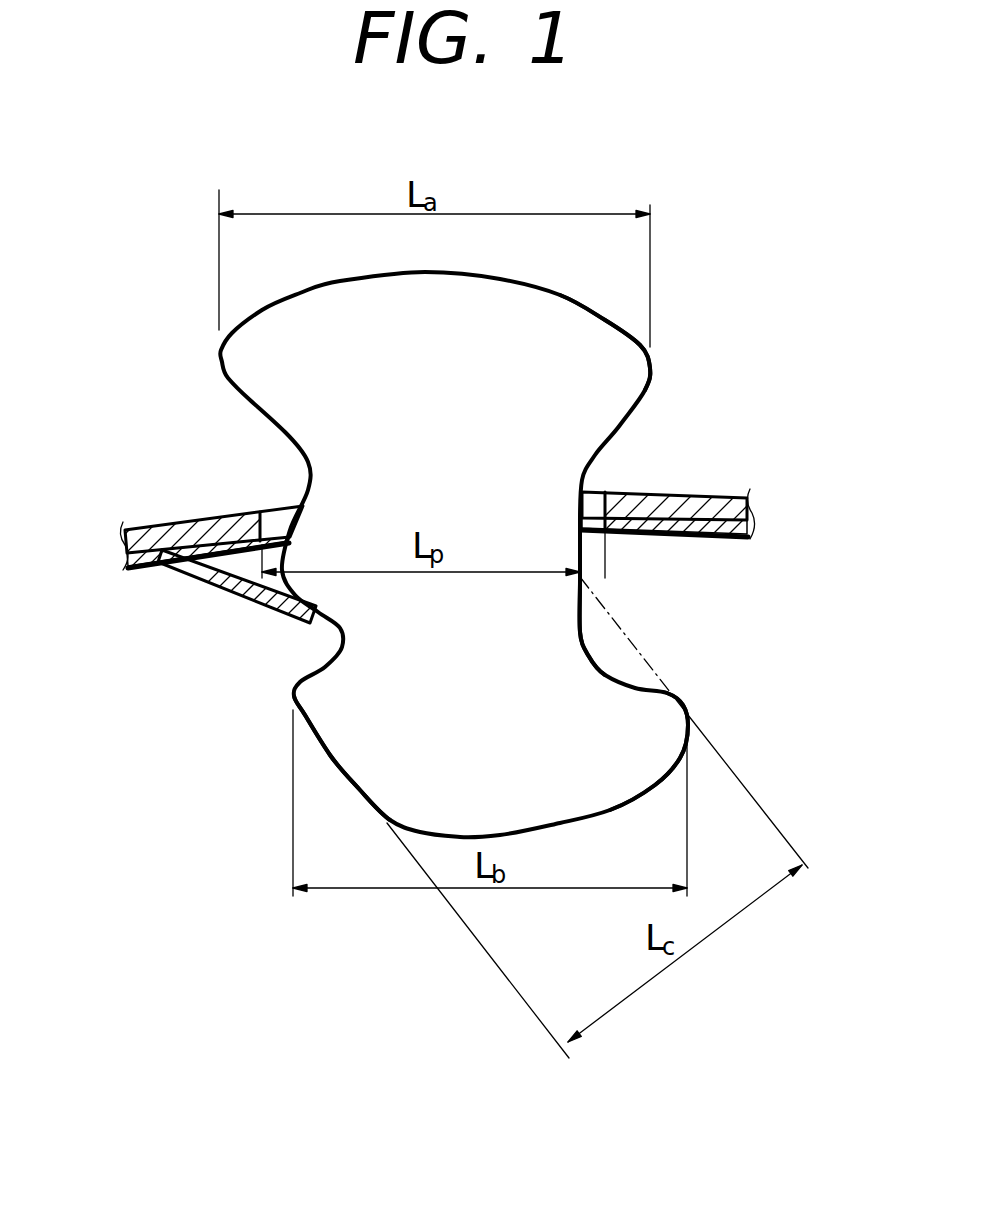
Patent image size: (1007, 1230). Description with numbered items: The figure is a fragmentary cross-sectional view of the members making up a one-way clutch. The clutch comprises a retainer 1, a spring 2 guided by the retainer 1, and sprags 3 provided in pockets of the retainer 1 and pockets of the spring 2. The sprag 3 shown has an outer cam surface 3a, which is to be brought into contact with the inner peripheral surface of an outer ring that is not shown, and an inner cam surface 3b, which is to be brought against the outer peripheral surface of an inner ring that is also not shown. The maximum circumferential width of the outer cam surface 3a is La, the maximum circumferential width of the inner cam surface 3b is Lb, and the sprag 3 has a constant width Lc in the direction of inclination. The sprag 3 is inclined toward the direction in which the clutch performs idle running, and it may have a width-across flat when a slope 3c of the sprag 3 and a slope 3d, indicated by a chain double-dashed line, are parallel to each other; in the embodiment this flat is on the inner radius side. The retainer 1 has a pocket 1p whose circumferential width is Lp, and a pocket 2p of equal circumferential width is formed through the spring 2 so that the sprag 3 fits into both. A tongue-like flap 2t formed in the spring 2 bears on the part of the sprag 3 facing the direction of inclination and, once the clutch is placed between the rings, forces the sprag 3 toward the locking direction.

The retainer 1 is at (720, 500).
The pocket of the retainer 1p is at (277, 517).
The spring 2 is at (700, 540).
The pocket of the spring 2p is at (595, 492).
The tongue-like flap 2t is at (250, 600).
The sprag 3 is at (267, 328).
The outer cam surface 3a is at (617, 323).
The inner cam surface 3b is at (652, 790).
The slope 3c is at (340, 767).
The slope 3d is at (640, 652).